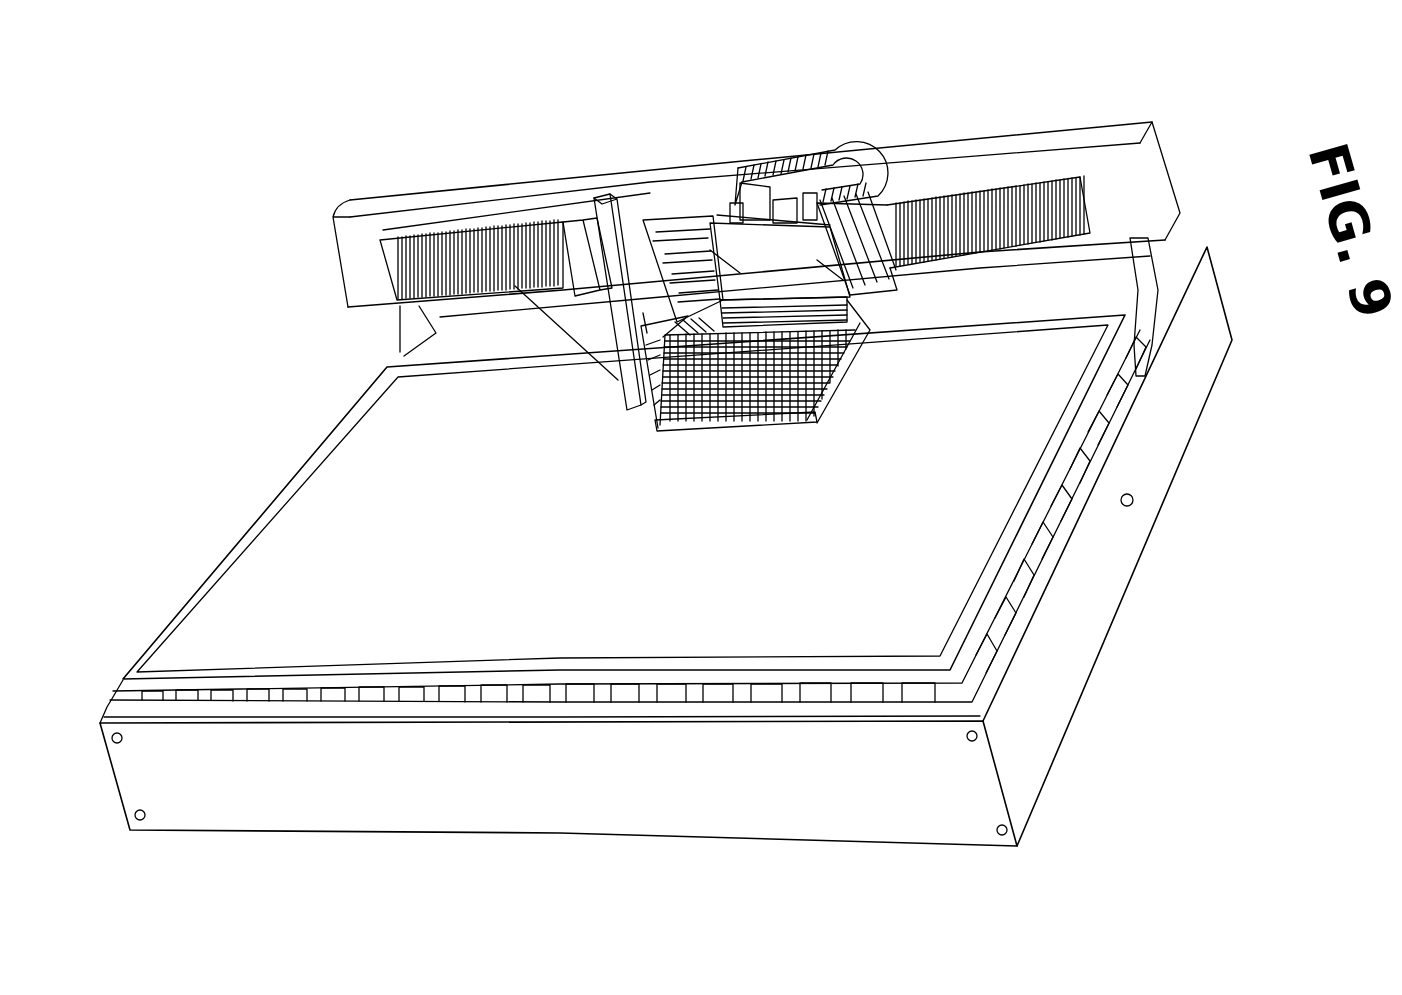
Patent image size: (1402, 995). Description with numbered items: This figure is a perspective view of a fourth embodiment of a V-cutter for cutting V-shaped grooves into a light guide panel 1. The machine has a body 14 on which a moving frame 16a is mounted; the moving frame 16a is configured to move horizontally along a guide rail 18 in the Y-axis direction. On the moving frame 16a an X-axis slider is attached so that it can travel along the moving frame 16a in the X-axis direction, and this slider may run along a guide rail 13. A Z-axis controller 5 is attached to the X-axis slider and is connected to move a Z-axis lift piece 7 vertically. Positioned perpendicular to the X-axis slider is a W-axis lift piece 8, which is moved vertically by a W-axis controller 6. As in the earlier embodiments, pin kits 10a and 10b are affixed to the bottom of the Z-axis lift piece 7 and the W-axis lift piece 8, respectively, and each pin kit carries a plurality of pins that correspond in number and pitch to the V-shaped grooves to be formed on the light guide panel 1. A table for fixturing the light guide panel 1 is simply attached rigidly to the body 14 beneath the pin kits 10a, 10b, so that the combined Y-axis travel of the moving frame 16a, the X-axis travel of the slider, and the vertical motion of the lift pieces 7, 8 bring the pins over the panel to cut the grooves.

The light guide panel 1 is at (848, 352).
The Z-axis controller 5 is at (774, 152).
The W-axis controller 6 is at (600, 199).
The Z-axis lift piece 7 is at (812, 195).
The W-axis lift piece 8 is at (648, 242).
The pin kit 10a is at (863, 258).
The pin kit 10b is at (490, 228).
The guide rail 13 is at (900, 263).
The body 14 is at (1197, 373).
The moving frame 16a is at (1108, 172).
The guide rail 18 is at (1057, 537).